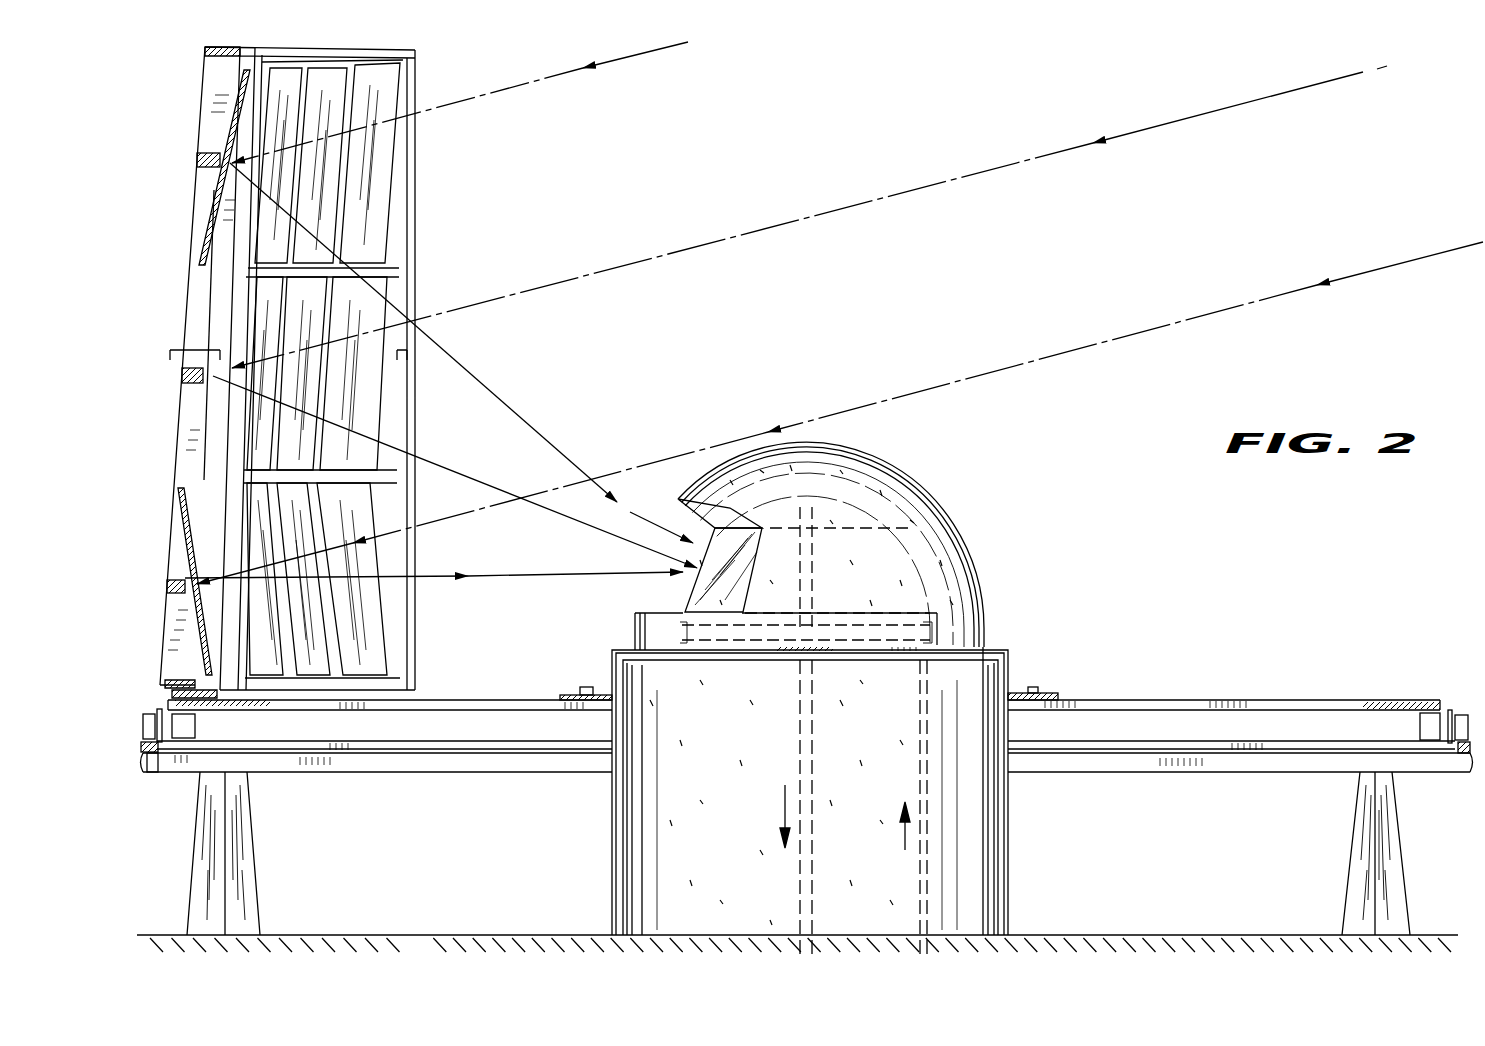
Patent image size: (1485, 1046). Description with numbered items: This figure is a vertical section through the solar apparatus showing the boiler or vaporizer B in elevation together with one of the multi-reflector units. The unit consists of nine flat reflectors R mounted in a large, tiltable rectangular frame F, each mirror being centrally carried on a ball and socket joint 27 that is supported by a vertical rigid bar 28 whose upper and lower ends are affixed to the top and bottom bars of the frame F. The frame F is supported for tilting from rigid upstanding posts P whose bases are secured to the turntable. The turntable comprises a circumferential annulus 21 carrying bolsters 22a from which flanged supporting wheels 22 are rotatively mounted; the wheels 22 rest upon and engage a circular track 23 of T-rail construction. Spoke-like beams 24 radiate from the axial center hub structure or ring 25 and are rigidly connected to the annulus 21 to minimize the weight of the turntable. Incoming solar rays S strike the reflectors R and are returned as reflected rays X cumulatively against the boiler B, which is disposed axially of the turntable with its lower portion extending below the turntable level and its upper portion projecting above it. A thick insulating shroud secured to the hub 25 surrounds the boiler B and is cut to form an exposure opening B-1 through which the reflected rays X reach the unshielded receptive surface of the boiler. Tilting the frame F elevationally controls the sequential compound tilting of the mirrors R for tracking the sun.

The rectangular frame F is at (208, 60).
The flat reflector R is at (373, 183).
The ball and socket joint 27 is at (218, 160).
The vertical rigid bar 28 is at (207, 170).
The upstanding post P is at (187, 373).
The solar rays S is at (585, 70).
The reflected rays X is at (557, 442).
The boiler or vaporizer B is at (627, 633).
The exposure portion B-1 is at (687, 538).
The circumferential annulus 21 is at (1398, 702).
The flanged supporting wheel 22 is at (142, 720).
The bolster 22a is at (195, 727).
The circular track 23 is at (140, 767).
The spoke-like beam 24 is at (1165, 700).
The center hub structure or ring 25 is at (1040, 690).